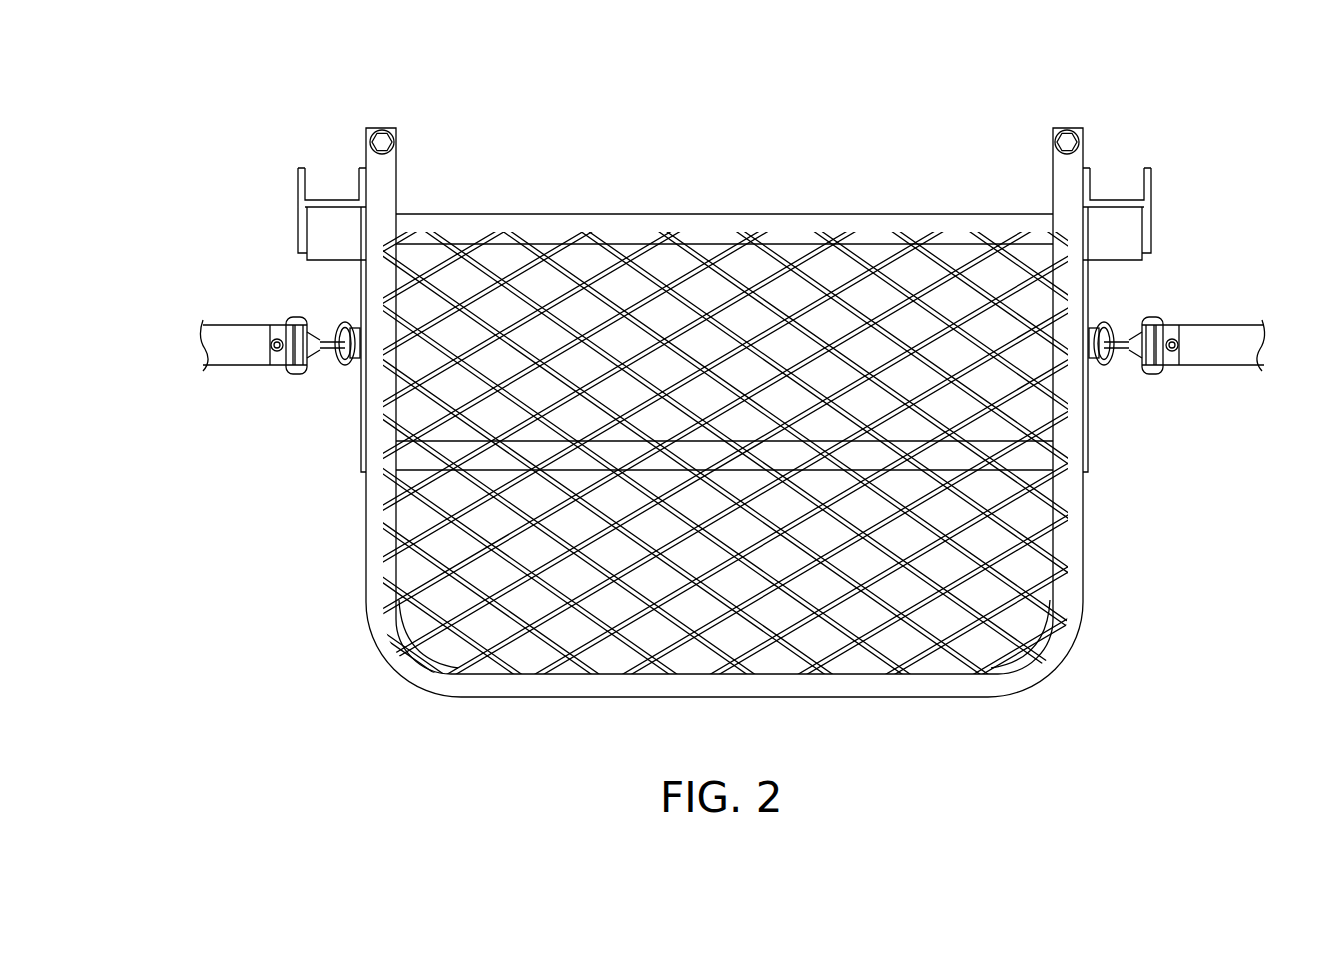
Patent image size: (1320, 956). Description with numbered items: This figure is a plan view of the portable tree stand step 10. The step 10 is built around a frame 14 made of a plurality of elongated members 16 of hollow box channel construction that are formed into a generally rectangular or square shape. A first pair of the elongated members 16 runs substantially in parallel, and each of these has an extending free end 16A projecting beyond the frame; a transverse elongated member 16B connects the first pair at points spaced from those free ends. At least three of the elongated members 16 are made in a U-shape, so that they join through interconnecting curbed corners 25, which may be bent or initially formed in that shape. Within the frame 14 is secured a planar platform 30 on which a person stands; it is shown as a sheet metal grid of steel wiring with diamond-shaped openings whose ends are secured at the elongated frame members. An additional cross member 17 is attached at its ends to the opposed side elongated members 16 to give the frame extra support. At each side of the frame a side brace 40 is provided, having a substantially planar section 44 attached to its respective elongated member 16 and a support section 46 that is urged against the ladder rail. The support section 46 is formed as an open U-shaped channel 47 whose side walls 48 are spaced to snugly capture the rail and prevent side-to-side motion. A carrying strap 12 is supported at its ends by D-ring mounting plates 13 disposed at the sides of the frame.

The step 10 is at (363, 663).
The strap 12 is at (240, 358).
The D-ring mounting plates 13 is at (342, 370).
The frame 14 is at (610, 688).
The elongated members 16 is at (374, 498).
The extending free ends 16A is at (378, 178).
The elongated member 16B is at (620, 230).
The cross member 17 is at (867, 452).
The curbed corners 25 is at (420, 672).
The planar platform 30 is at (737, 327).
The side braces 40 is at (726, 347).
The planar section 44 is at (360, 455).
The support section 46 is at (724, 177).
The U-shaped channel 47 is at (330, 190).
The side walls 48 is at (1152, 180).